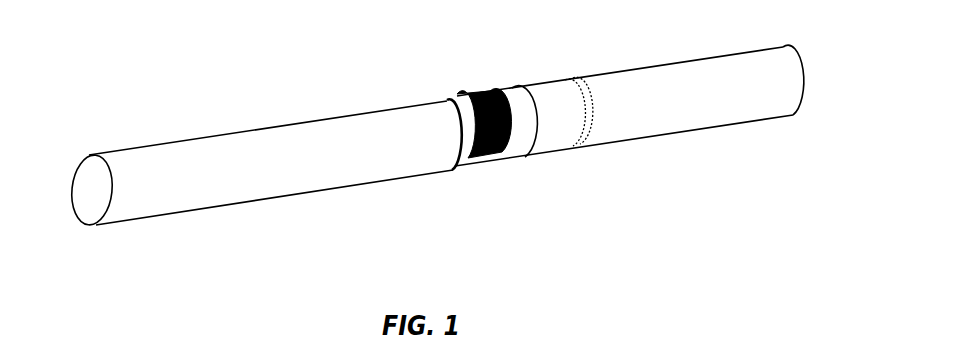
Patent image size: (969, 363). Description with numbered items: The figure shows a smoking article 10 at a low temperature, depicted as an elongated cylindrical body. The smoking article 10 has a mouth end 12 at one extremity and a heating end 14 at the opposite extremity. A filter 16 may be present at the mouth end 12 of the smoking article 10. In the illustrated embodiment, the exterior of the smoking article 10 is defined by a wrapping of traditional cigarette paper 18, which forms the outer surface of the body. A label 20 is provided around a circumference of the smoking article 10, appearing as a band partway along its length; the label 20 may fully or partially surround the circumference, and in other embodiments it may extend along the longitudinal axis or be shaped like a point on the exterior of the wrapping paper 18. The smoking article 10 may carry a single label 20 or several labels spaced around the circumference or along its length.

The smoking article 10 is at (255, 186).
The mouth end 12 is at (657, 91).
The heating end 14 is at (137, 182).
The filter 16 is at (737, 87).
The wrapping paper 18 is at (367, 160).
The label 20 is at (463, 155).